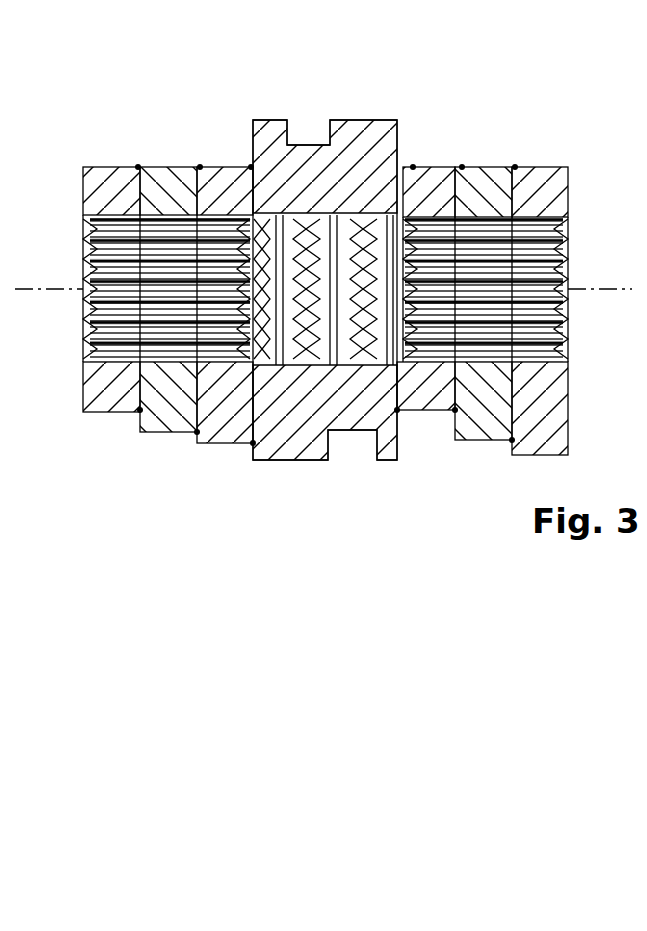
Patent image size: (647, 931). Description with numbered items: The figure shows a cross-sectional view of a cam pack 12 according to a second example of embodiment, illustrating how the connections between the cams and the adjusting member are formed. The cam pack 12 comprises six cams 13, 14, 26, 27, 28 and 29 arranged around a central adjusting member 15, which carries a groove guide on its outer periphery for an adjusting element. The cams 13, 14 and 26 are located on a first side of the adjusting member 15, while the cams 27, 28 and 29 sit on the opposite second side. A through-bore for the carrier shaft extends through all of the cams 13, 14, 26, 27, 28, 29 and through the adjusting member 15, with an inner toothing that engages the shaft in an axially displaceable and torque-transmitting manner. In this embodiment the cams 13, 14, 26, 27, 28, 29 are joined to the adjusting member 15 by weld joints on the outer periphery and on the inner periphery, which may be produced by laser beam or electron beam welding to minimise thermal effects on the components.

The cam pack 12 is at (286, 505).
The cam 13 is at (105, 167).
The cam 14 is at (162, 167).
The adjusting member 15 is at (350, 118).
The cam 26 is at (218, 167).
The cam 27 is at (428, 167).
The cam 28 is at (482, 167).
The cam 29 is at (545, 167).